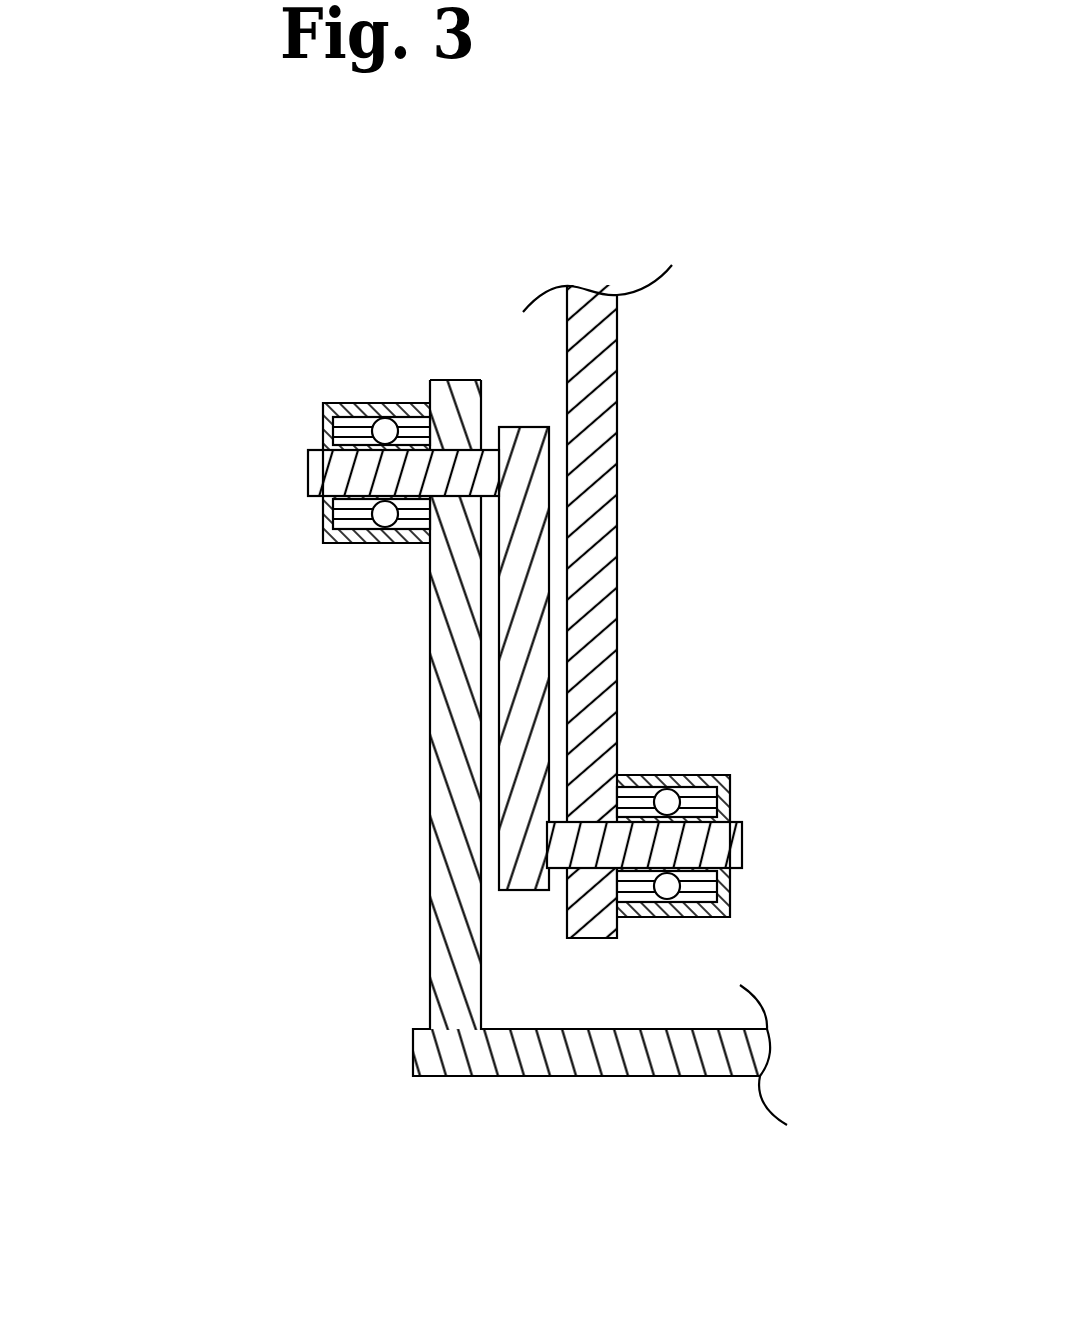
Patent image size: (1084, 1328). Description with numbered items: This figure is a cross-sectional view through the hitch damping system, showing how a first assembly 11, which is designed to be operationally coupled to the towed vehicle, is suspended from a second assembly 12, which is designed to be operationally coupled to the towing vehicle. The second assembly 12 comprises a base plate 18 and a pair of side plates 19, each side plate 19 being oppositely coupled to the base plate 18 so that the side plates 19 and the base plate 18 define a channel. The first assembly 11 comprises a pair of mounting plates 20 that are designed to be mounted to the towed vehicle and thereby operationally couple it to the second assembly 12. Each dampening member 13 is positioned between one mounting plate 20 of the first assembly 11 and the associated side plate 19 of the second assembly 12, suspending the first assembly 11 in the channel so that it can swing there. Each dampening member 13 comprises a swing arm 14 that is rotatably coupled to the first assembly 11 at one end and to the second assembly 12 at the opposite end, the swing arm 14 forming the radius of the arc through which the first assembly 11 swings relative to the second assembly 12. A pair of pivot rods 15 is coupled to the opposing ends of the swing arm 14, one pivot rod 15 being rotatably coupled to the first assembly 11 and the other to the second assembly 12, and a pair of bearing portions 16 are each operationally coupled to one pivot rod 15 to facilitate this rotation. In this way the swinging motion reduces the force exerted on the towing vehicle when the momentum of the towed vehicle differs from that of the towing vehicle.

The first assembly 11 is at (592, 276).
The second assembly 12 is at (375, 958).
The dampening member 13 is at (497, 680).
The swing arm 14 is at (522, 797).
The pivot rod 15 is at (308, 473).
The bearing portion 16 is at (338, 407).
The base plate 18 is at (532, 1058).
The side plate 19 is at (428, 905).
The mounting plate 20 is at (593, 369).